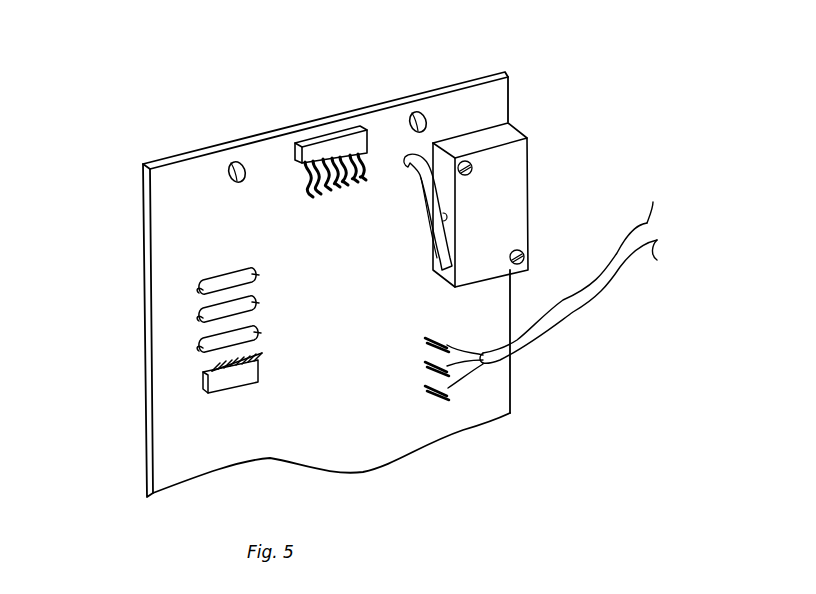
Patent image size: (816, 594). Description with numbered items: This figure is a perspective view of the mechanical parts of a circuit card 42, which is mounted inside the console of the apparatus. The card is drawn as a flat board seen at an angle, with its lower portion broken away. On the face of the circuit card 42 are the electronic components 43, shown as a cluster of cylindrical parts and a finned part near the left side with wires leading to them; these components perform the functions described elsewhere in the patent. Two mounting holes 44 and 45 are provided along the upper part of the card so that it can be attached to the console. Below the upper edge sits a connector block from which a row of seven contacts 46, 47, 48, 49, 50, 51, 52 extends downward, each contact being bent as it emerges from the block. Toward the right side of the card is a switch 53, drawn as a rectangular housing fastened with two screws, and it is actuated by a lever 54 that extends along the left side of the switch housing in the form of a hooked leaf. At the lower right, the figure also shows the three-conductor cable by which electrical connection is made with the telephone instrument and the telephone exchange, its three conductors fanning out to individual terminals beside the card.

The circuit card 42 is at (175, 231).
The electronic components 43 is at (207, 290).
The mounting hole 44 is at (231, 161).
The mounting hole 45 is at (411, 110).
The contact 46 is at (313, 198).
The contact 47 is at (323, 197).
The contact 48 is at (332, 192).
The contact 49 is at (338, 190).
The contact 50 is at (347, 188).
The contact 51 is at (355, 185).
The contact 52 is at (365, 182).
The switch 53 is at (508, 190).
The lever 54 is at (405, 162).